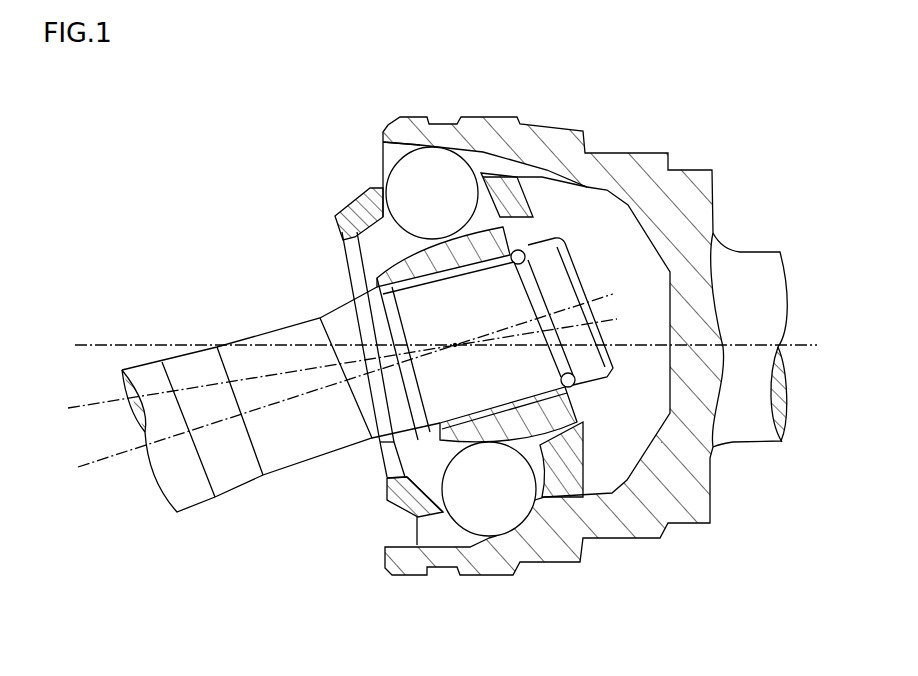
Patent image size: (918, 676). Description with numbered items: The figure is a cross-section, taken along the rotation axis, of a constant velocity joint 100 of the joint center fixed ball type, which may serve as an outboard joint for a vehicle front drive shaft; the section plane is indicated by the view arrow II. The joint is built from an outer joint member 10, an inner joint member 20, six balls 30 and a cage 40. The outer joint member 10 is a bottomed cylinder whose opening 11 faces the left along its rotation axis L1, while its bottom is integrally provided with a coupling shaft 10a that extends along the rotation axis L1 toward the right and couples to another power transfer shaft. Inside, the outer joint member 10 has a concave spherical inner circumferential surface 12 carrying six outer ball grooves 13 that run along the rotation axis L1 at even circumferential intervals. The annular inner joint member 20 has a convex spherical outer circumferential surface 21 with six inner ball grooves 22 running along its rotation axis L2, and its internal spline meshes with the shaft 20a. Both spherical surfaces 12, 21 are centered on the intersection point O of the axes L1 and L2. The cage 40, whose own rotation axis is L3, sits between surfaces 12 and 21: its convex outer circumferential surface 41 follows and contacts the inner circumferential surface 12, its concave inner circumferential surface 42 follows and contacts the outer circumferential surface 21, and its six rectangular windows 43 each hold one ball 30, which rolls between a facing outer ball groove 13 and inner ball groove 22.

The constant velocity joint 100 is at (235, 132).
The outer joint member 10 is at (564, 342).
The coupling shaft 10a is at (767, 268).
The opening 11 is at (382, 131).
The inner circumferential surface 12 is at (488, 153).
The outer ball grooves 13 is at (520, 170).
The inner joint member 20 is at (487, 367).
The shaft 20a is at (190, 492).
The outer circumferential surface 21 is at (560, 497).
The inner ball grooves 22 is at (398, 238).
The balls 30 is at (417, 188).
The cage 40 is at (391, 409).
The outer circumferential surface 41 is at (410, 514).
The inner circumferential surface 42 is at (383, 460).
The windows 43 is at (473, 510).
The intersection point O is at (455, 345).
The rotation axis L1 is at (432, 344).
The rotation axis L2 is at (330, 386).
The rotation axis L3 is at (325, 370).
The view direction II is at (200, 258).